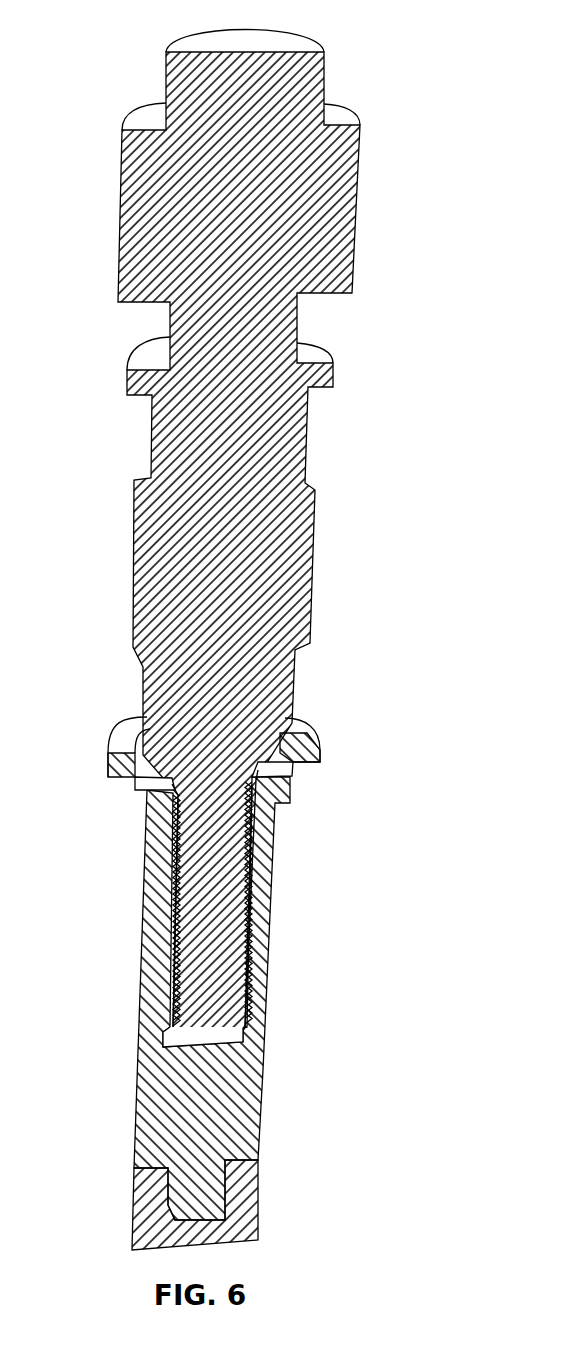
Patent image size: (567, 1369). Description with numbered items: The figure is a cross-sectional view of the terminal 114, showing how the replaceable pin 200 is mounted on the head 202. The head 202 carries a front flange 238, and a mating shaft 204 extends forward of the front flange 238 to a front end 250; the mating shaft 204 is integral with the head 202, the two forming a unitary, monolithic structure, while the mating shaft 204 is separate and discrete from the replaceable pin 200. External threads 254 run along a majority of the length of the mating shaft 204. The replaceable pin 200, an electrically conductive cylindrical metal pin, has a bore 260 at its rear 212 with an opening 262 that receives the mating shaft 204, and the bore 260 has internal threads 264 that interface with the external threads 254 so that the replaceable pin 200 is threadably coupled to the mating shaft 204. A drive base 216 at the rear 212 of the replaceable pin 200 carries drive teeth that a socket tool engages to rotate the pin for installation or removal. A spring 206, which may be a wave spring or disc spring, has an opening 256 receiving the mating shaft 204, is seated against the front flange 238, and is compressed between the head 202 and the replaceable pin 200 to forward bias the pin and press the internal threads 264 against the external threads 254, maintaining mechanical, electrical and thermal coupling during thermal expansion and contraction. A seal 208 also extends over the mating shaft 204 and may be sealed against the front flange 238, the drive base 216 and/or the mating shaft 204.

The terminal 114 is at (376, 97).
The replaceable pin 200 is at (248, 1107).
The head 202 is at (296, 548).
The mating shaft 204 is at (268, 935).
The spring 206 is at (288, 776).
The seal 208 is at (284, 770).
The rear 212 is at (135, 783).
The drive base 216 is at (152, 813).
The front flange 238 is at (120, 772).
The front end 250 is at (212, 1032).
The external threads 254 is at (244, 993).
The opening 256 is at (176, 791).
The bore 260 is at (252, 868).
The opening 262 is at (257, 777).
The internal threads 264 is at (224, 912).